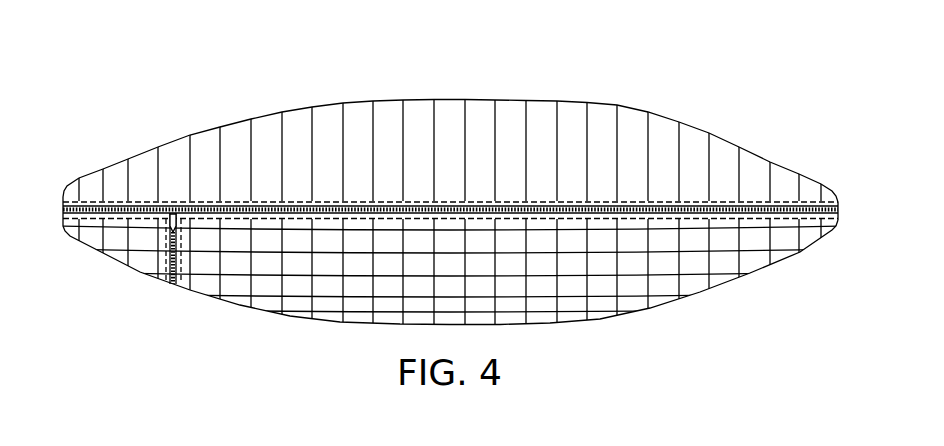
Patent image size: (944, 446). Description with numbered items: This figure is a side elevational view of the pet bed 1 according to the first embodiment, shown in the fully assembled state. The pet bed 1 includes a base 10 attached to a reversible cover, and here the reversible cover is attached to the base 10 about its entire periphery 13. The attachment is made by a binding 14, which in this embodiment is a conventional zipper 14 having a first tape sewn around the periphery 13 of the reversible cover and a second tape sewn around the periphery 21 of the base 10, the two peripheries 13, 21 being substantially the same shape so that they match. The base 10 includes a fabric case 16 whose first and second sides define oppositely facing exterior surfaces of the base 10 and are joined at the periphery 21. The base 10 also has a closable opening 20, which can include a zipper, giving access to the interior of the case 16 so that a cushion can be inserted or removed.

The pet bed 1 is at (690, 78).
The base 10 is at (265, 315).
The periphery 13 is at (64, 205).
The binding 14 is at (838, 208).
The case 16 is at (92, 237).
The closable opening 20 is at (168, 262).
The periphery 21 is at (838, 216).